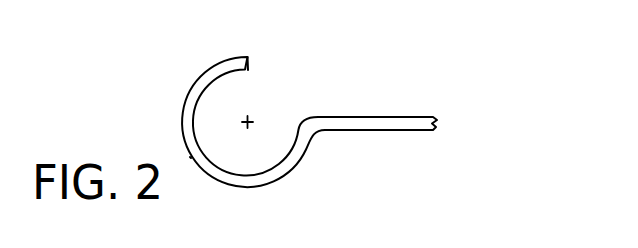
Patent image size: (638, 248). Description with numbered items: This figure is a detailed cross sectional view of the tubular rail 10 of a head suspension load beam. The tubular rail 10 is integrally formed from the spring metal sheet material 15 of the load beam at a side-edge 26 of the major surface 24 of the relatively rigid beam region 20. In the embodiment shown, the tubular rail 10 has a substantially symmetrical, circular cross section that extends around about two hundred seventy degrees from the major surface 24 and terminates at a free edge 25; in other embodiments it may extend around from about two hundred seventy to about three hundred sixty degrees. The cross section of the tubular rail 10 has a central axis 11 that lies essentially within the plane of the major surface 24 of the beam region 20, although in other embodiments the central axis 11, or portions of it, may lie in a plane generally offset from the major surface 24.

The tubular rail 10 is at (197, 82).
The central axis 11 is at (251, 120).
The spring metal sheet material 15 is at (423, 117).
The beam region 20 is at (397, 130).
The major surface 24 is at (359, 117).
The free edge 25 is at (249, 62).
The side-edges 26 is at (190, 157).